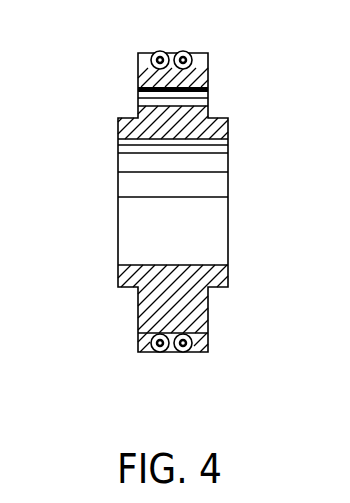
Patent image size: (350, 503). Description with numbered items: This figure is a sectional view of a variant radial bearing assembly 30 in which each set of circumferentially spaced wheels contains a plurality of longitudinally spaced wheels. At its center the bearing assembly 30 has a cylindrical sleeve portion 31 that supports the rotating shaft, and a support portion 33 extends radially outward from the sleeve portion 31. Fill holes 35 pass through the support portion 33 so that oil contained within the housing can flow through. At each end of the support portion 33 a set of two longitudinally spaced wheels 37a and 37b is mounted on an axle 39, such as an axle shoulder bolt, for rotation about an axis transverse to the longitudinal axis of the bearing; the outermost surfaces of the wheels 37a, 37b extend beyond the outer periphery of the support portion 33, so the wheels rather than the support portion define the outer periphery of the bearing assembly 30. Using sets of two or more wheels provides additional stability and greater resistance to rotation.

The bearing assembly 30 is at (248, 133).
The cylindrical sleeve portion 31 is at (118, 130).
The support portion 33 is at (210, 78).
The fill holes 35 is at (138, 95).
The wheel 37a is at (160, 353).
The wheel 37b is at (183, 353).
The axle 39 is at (138, 337).